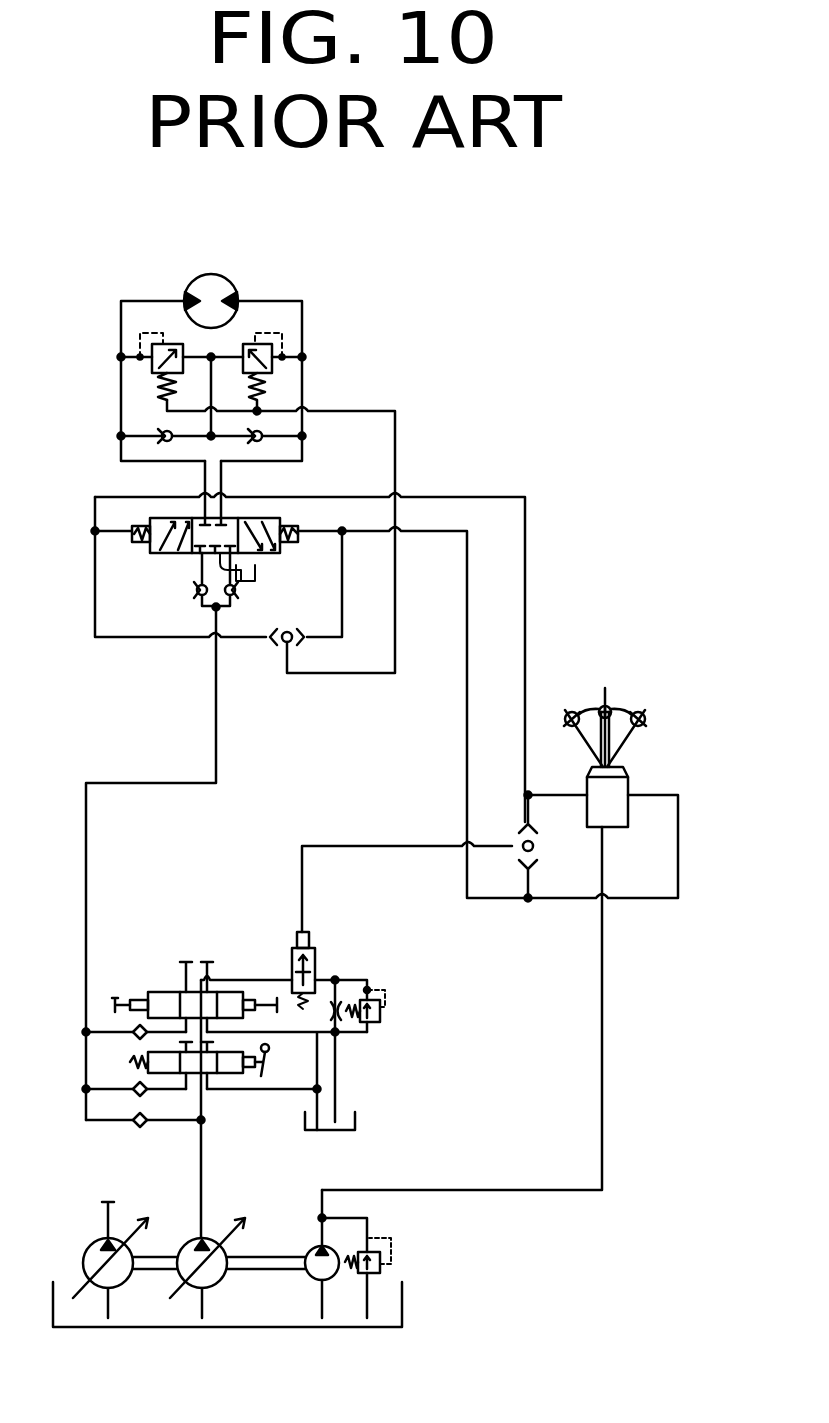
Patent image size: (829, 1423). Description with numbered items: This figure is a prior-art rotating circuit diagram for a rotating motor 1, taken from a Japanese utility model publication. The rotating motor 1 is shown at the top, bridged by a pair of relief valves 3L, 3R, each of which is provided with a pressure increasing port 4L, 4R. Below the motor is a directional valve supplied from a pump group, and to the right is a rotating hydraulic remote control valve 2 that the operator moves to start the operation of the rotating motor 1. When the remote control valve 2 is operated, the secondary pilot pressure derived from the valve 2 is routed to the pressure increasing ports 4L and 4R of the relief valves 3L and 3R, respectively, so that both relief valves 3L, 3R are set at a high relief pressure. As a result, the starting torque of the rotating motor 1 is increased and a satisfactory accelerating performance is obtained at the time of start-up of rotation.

The rotating motor 1 is at (199, 275).
The rotating hydraulic remote control valve 2 is at (628, 777).
The relief valve 3L is at (153, 373).
The relief valve 3R is at (273, 368).
The pressure increasing port 4L is at (158, 403).
The pressure increasing port 4R is at (266, 385).